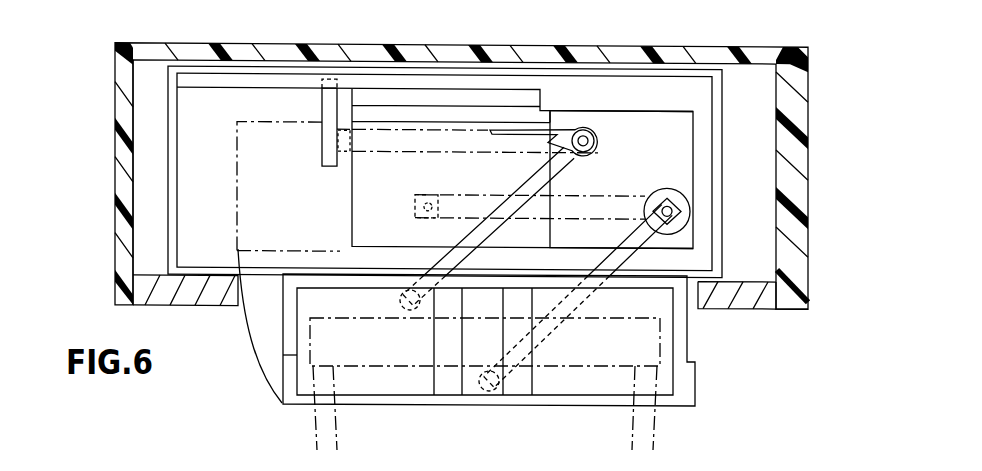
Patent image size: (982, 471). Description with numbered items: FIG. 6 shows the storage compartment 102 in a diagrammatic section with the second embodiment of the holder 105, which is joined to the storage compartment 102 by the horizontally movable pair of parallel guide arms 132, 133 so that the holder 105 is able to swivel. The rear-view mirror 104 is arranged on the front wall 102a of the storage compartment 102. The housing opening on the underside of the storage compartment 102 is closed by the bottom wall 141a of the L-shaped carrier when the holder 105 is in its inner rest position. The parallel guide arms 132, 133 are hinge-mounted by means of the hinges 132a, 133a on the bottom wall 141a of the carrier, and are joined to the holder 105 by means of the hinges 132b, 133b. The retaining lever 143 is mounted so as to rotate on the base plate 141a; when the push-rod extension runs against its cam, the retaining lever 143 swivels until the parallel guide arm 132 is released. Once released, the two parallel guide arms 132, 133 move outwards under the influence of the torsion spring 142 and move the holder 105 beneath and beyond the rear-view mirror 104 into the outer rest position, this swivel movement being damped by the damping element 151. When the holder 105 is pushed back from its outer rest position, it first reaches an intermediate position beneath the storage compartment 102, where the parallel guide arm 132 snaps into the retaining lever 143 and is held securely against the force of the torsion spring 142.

The storage compartment 102 is at (118, 45).
The front wall 102a is at (797, 312).
The rear-view mirror 104 is at (737, 313).
The holder 105 is at (688, 403).
The parallel guide arm 132 is at (440, 258).
The hinge 132a is at (598, 140).
The hinge 132b is at (404, 310).
The parallel guide arm 133 is at (610, 256).
The hinge 133a is at (686, 197).
The hinge 133b is at (497, 386).
The bottom wall of the carrier 141a is at (681, 162).
The torsion spring 142 is at (505, 134).
The retaining lever 143 is at (322, 153).
The damping element 151 is at (683, 222).